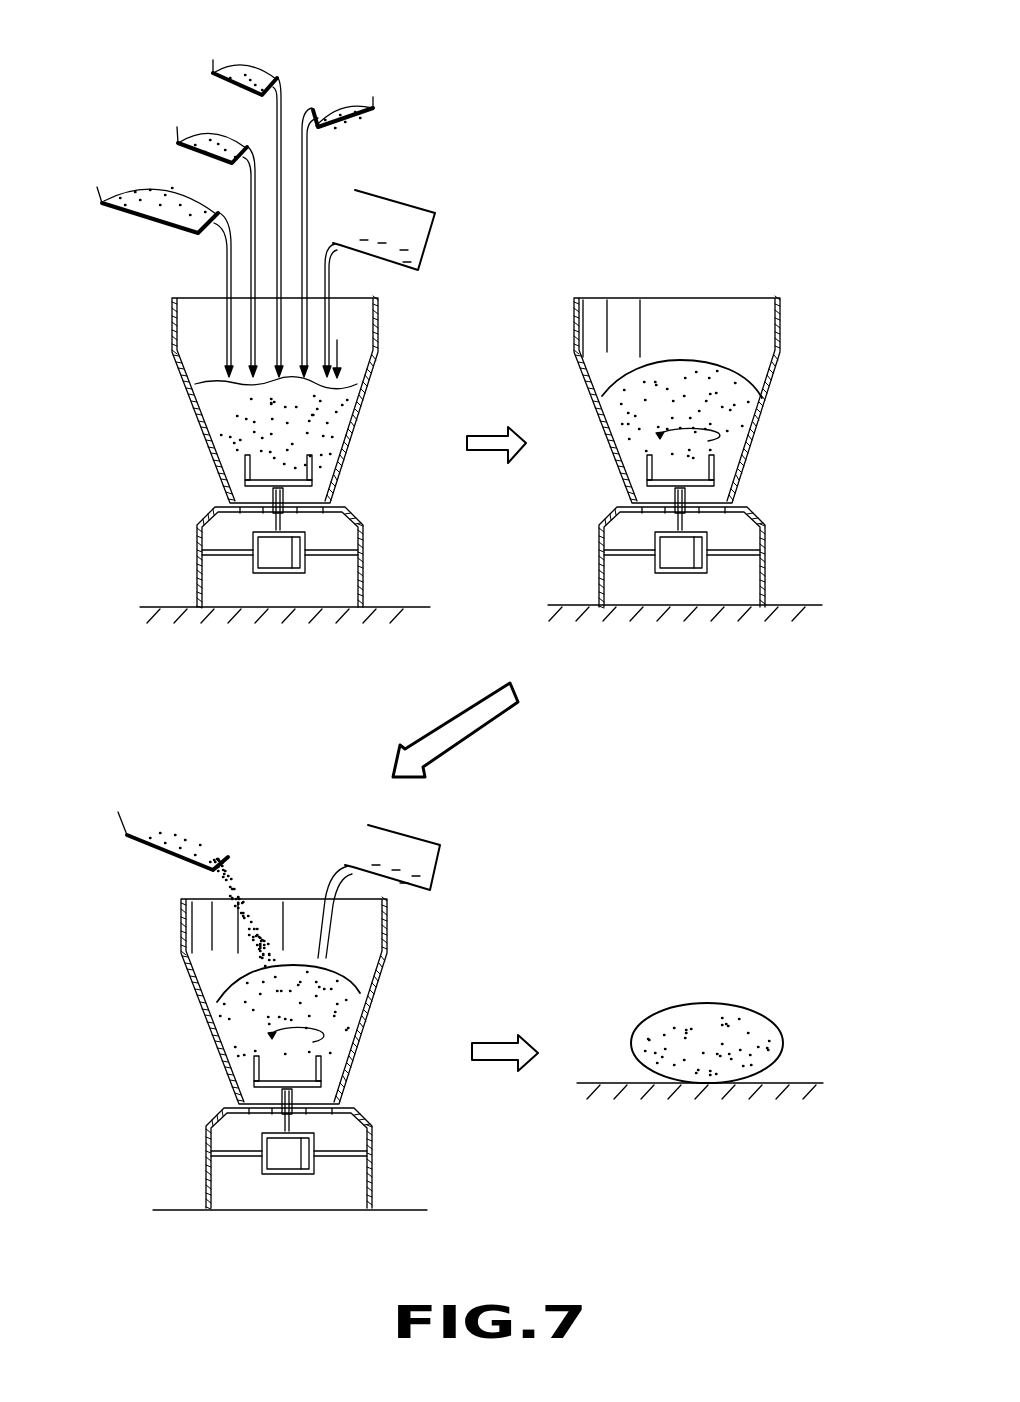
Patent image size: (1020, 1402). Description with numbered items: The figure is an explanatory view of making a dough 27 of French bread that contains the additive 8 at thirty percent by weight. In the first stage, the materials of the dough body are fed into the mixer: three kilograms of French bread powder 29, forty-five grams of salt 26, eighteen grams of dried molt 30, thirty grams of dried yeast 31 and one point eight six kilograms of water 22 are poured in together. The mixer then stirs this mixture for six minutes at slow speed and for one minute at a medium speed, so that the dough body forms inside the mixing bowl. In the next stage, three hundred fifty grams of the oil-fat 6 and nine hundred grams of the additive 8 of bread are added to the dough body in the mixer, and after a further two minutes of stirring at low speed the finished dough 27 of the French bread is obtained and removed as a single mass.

The oil-fat 6 is at (410, 863).
The additive 8 is at (225, 852).
The water 22 is at (378, 245).
The salt 26 is at (220, 140).
The dough 27 is at (738, 1015).
The French bread powder 29 is at (150, 195).
The dried molt 30 is at (258, 75).
The dried yeast 31 is at (333, 105).